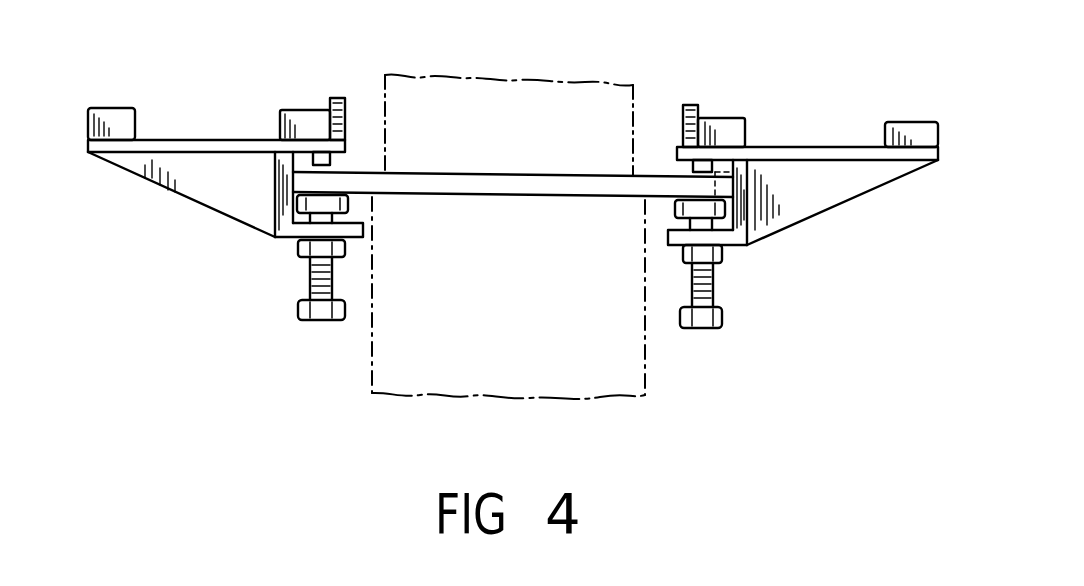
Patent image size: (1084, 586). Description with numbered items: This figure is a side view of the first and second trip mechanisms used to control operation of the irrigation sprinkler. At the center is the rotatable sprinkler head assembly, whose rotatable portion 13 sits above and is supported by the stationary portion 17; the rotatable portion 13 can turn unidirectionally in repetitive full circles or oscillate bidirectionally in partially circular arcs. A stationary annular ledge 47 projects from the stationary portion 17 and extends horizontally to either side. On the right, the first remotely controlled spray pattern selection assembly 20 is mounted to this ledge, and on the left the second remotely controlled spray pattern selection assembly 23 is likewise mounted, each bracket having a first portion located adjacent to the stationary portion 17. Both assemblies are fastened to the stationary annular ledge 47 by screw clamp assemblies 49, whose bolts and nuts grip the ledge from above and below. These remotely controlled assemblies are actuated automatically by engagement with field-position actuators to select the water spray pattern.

The rotatable portion 13 is at (423, 112).
The stationary portion 17 is at (407, 327).
The first remotely controlled spray pattern selection assembly 20 is at (805, 136).
The second remotely controlled spray pattern selection assembly 23 is at (268, 107).
The stationary annular ledge 47 is at (658, 187).
The screw clamp assemblies 49 is at (284, 260).